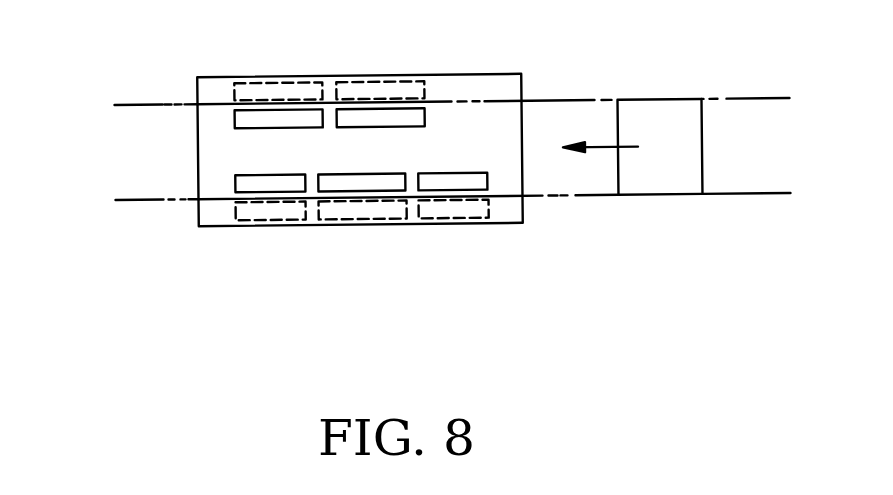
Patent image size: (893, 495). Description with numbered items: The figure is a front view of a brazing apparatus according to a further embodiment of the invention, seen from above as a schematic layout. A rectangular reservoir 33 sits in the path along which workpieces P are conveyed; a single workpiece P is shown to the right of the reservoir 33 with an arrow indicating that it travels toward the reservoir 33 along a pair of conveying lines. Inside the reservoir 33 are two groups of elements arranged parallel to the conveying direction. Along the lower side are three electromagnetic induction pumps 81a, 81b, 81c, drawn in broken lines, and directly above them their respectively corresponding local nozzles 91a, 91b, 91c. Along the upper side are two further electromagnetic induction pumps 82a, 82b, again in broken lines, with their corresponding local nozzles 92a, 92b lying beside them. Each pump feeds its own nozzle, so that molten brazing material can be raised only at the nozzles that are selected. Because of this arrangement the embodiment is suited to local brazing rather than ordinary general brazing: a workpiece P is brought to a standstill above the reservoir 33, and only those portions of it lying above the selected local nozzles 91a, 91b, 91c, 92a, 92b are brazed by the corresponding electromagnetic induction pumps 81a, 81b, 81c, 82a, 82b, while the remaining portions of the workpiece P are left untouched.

The reservoir 33 is at (487, 75).
The workpiece P is at (650, 120).
The electromagnetic induction pump 82b is at (276, 82).
The electromagnetic induction pump 82a is at (384, 82).
The local nozzle 92b is at (268, 117).
The local nozzle 92a is at (377, 118).
The local nozzle 91c is at (258, 180).
The local nozzle 91b is at (373, 180).
The local nozzle 91a is at (467, 162).
The electromagnetic induction pump 81c is at (258, 220).
The electromagnetic induction pump 81b is at (363, 220).
The electromagnetic induction pump 81a is at (447, 219).